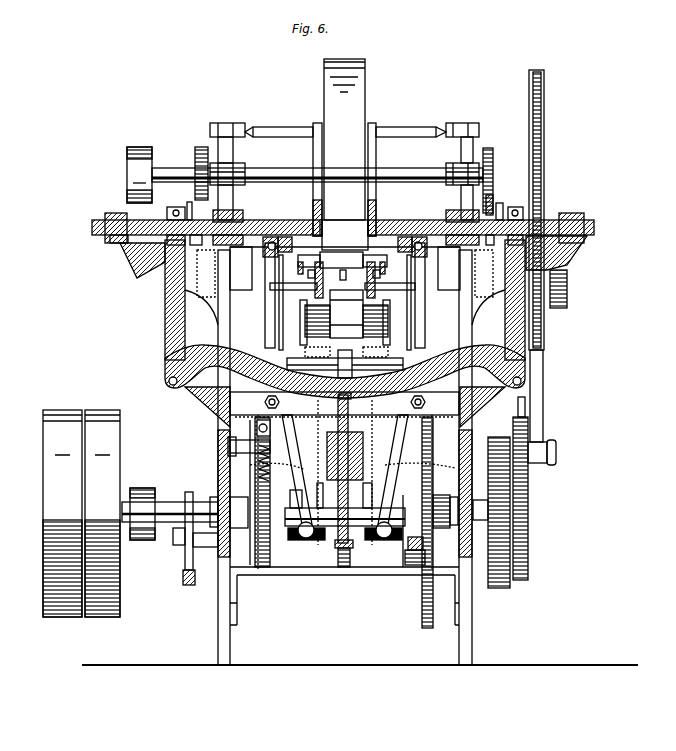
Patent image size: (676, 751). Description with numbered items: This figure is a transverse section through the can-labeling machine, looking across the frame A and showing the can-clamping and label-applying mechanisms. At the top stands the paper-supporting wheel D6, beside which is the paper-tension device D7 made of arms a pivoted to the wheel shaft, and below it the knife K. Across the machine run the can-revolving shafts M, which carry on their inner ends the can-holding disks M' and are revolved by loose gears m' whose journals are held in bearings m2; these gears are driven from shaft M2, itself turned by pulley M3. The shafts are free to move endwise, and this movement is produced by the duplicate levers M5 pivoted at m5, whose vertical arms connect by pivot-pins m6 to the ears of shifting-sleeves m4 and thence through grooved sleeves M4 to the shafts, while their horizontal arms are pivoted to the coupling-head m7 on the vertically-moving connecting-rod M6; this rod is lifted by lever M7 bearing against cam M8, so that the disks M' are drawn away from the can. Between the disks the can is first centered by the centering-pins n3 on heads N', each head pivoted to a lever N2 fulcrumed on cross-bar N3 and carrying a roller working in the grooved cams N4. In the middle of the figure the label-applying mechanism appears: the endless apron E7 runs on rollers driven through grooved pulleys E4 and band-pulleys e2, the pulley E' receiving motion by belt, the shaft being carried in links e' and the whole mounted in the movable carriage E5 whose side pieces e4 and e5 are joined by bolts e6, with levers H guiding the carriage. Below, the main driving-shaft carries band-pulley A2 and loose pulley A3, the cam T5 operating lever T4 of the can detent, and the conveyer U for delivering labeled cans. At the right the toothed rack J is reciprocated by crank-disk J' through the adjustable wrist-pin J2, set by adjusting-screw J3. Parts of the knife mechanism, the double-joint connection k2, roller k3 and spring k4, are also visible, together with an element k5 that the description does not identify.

The can-revolving shaft M is at (336, 214).
The can-holding disk M' is at (344, 159).
The shaft M2 is at (345, 149).
The pulley M3 is at (139, 175).
The grooved sleeve M4 is at (500, 203).
The shifting-sleeve m4 is at (522, 208).
The loose gear m' is at (341, 204).
The bearing m2 is at (448, 212).
The can-centering pin n3 is at (384, 237).
The paper-supporting wheel D6 is at (365, 80).
The paper-tension device D7 is at (368, 155).
The arm a is at (383, 152).
The toothed rack J is at (549, 256).
The revolving crank-disk J' is at (521, 512).
The adjustable wrist-pin J2 is at (556, 452).
The adjusting-screw J3 is at (517, 408).
The knife K is at (345, 235).
The head N' is at (343, 292).
The lever N2 is at (418, 326).
The cross-bar N3 is at (344, 404).
The grooved cam N4 is at (312, 540).
The label-applying apron E7 is at (342, 260).
The movable carriage E5 is at (341, 277).
The pulley E' is at (346, 314).
The grooved pulley E4 is at (386, 336).
The link e' is at (343, 355).
The band-pulley e2 is at (385, 262).
The side piece e4 is at (328, 280).
The side piece e5 is at (363, 280).
The bolt e6 is at (378, 274).
The lever H is at (342, 314).
The double-joint connection k2 is at (345, 364).
The roller k3 is at (436, 445).
The spring k4 is at (428, 482).
The spring k5 is at (272, 472).
The lever M5 is at (528, 365).
The pivot m5 is at (521, 381).
The connecting-rod M6 is at (349, 415).
The pivot-pin m6 is at (548, 257).
The lever M7 is at (340, 548).
The coupling-head m7 is at (352, 398).
The cam M8 is at (345, 504).
The frame A is at (170, 502).
The band-pulley A2 is at (102, 513).
The loose pulley A3 is at (62, 513).
The conveyer U is at (142, 514).
The lever T4 is at (188, 548).
The cam T5 is at (190, 492).